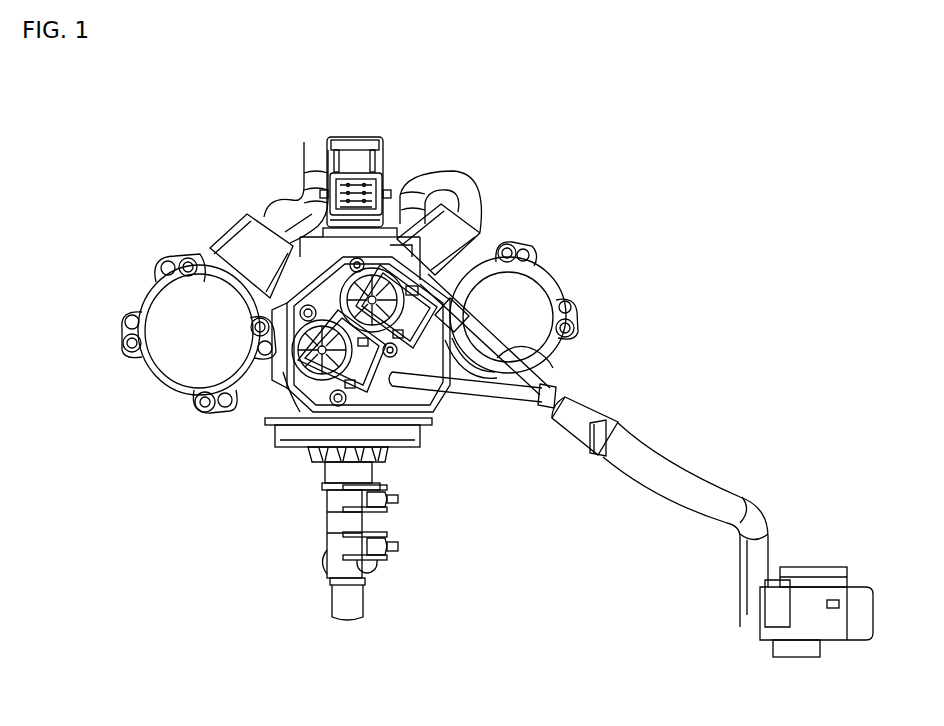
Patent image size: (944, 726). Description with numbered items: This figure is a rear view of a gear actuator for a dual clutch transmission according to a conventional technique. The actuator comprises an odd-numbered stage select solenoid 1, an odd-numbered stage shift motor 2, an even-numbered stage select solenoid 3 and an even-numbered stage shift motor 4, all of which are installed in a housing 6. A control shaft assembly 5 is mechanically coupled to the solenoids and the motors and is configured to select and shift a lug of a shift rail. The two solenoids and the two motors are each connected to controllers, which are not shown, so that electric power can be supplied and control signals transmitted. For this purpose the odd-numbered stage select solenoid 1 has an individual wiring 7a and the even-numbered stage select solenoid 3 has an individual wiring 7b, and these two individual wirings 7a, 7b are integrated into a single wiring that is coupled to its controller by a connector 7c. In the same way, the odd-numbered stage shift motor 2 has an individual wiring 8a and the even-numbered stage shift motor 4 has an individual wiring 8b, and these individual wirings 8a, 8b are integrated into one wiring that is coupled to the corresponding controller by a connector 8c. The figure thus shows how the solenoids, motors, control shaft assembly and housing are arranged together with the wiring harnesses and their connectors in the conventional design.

The odd-numbered stage select solenoid 1 is at (292, 405).
The odd-numbered stage shift motor 2 is at (530, 290).
The even-numbered stage select solenoid 3 is at (420, 423).
The even-numbered stage shift motor 4 is at (176, 356).
The control shaft assembly 5 is at (340, 603).
The housing 6 is at (285, 447).
The individual wiring 7a is at (463, 390).
The individual wiring 7b is at (558, 358).
The connector 7c is at (823, 577).
The individual wiring 8a is at (440, 173).
The individual wiring 8b is at (305, 178).
The connector 8c is at (358, 138).